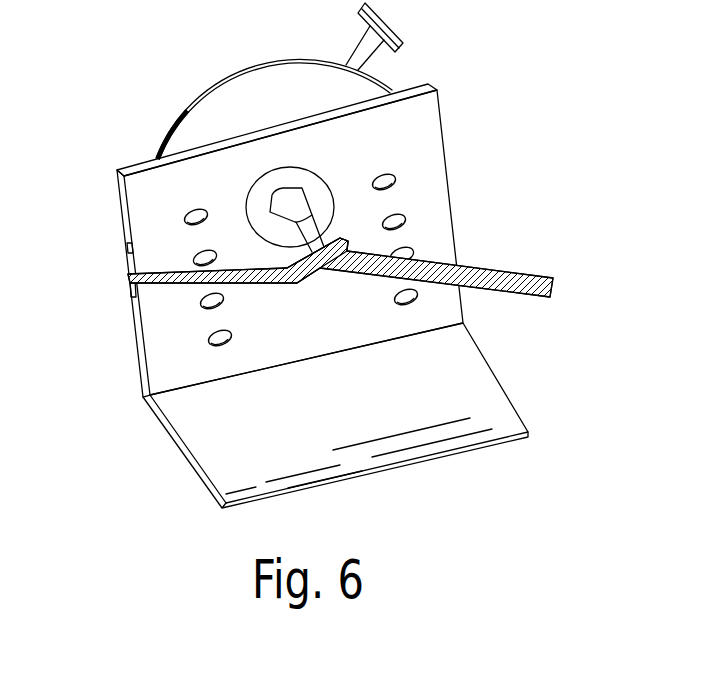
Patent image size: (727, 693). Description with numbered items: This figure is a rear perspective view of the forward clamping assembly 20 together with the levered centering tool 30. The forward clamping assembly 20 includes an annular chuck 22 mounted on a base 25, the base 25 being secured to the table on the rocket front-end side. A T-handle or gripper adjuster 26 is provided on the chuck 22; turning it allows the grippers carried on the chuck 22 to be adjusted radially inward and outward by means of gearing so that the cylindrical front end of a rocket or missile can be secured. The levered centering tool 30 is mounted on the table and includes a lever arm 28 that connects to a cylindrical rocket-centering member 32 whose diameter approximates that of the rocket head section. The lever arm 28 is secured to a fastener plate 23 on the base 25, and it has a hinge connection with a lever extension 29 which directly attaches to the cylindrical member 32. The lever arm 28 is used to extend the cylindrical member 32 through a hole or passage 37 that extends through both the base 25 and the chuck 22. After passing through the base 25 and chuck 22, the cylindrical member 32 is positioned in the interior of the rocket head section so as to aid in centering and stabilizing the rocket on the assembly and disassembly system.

The forward clamping assembly 20 is at (130, 109).
The annular chuck 22 is at (250, 84).
The fastener plate 23 is at (124, 271).
The base 25 is at (190, 434).
The T-handle or gripper adjuster 26 is at (400, 32).
The lever arm 28 is at (522, 270).
The lever extension 29 is at (322, 243).
The levered centering tool 30 is at (485, 232).
The cylindrical rocket-centering member 32 is at (292, 200).
The hole or passage 37 is at (256, 200).